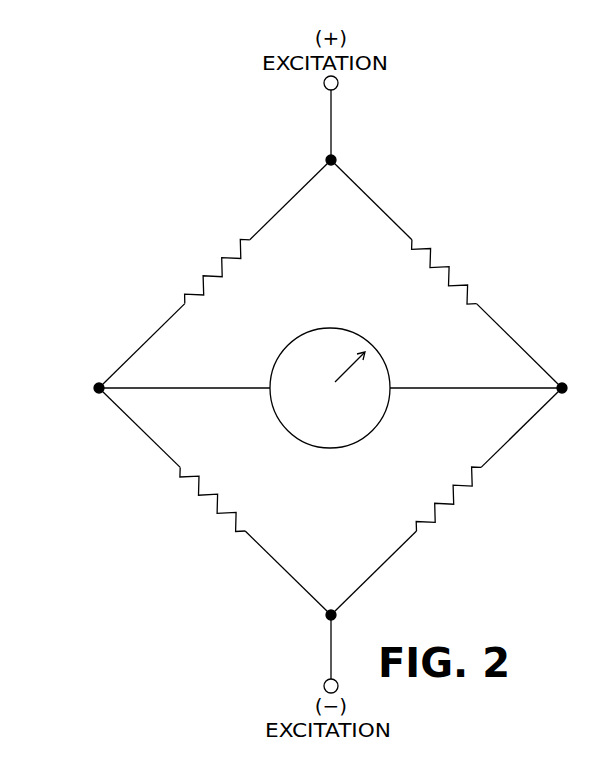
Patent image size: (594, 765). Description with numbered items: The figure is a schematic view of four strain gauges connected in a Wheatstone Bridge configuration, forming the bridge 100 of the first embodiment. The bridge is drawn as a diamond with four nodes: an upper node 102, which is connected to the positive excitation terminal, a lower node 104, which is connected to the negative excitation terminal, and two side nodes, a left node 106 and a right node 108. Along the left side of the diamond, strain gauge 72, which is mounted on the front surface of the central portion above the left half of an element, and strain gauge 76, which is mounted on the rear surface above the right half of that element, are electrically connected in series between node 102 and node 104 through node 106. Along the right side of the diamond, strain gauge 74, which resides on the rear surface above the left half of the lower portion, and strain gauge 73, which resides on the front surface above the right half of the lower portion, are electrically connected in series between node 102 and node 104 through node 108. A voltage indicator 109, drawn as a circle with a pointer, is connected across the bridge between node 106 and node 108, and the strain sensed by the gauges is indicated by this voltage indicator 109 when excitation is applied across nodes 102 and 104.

The bridge 100 is at (232, 194).
The strain gauge 72 is at (215, 264).
The strain gauge 73 is at (438, 250).
The strain gauge 74 is at (471, 493).
The strain gauge 76 is at (186, 495).
The node 102 is at (336, 158).
The node 104 is at (326, 617).
The node 106 is at (100, 382).
The node 108 is at (562, 383).
The voltage indicator 109 is at (390, 377).